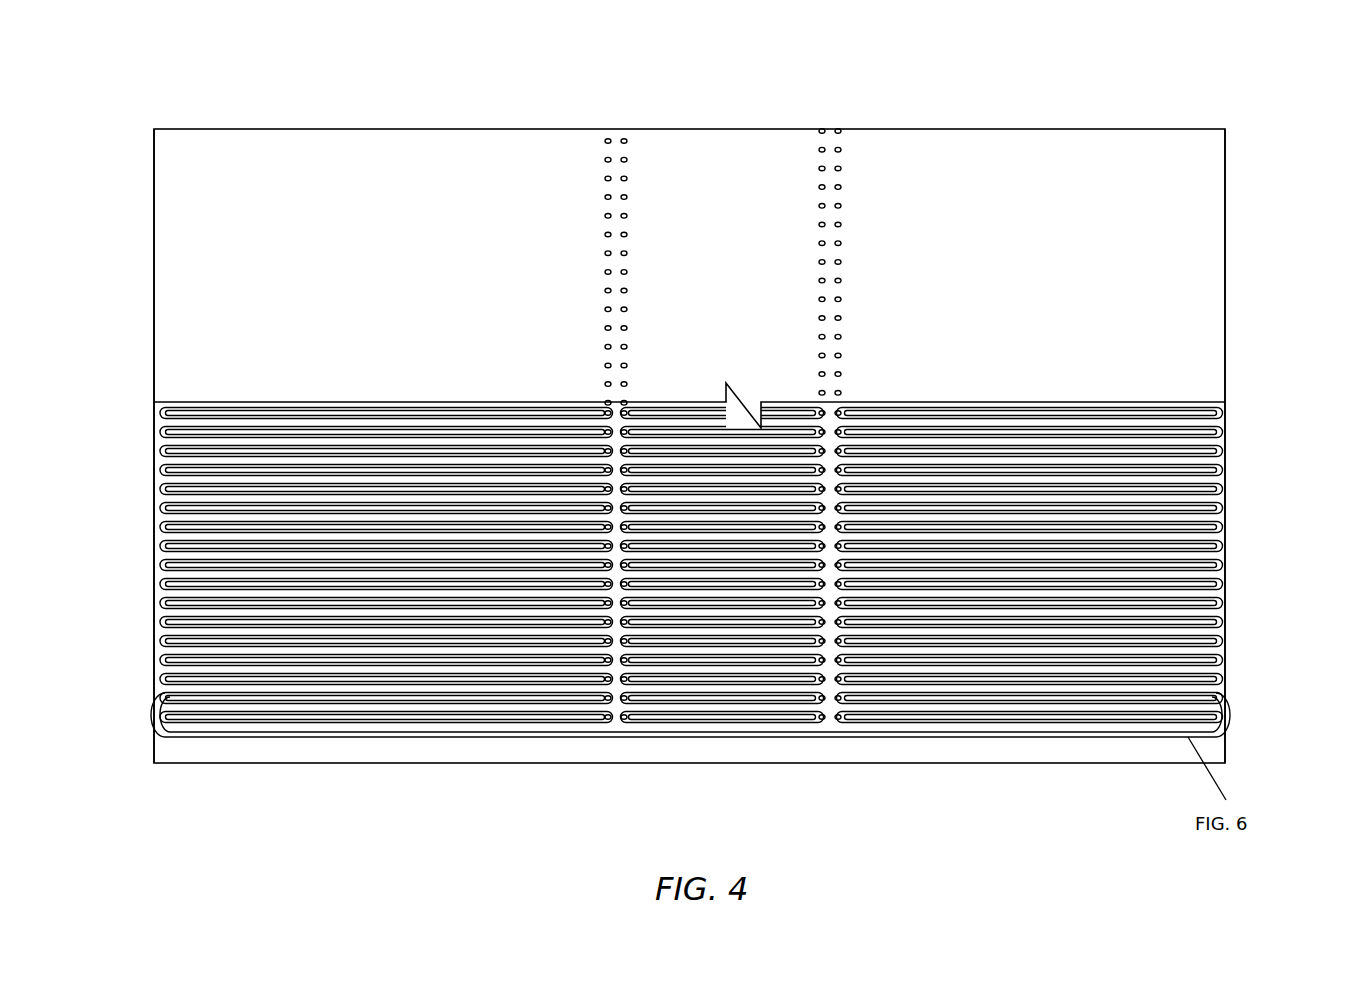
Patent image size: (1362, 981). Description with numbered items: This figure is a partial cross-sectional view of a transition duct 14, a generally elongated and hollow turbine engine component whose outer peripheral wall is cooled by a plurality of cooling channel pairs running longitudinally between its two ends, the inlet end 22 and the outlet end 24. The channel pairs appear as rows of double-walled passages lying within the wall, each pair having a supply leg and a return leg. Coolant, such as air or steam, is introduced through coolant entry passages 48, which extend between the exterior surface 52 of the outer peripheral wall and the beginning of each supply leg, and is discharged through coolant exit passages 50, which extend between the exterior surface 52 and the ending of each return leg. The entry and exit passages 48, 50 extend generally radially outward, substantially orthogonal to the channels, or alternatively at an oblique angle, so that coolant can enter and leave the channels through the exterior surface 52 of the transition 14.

The transition duct 14 is at (1247, 91).
The inlet end 22 is at (154, 265).
The outlet end 24 is at (1226, 231).
The coolant entry passages 48 is at (822, 128).
The coolant exit passages 50 is at (623, 138).
The exterior surface 52 is at (205, 166).